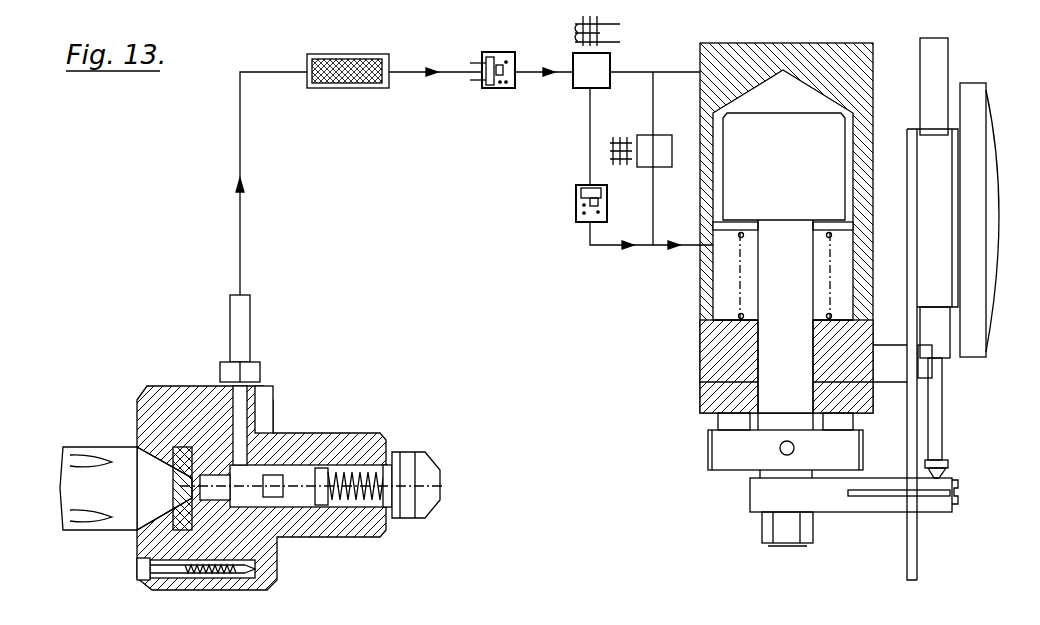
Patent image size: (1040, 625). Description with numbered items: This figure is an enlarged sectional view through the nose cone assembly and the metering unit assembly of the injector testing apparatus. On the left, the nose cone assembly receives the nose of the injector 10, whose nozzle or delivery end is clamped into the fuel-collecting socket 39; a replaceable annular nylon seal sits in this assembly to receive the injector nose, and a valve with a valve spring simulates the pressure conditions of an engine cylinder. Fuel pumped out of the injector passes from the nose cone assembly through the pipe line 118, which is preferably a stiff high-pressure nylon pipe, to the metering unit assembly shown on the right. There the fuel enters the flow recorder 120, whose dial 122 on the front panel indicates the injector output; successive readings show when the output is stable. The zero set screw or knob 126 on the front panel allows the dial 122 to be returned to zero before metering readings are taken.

The injector 10 is at (97, 447).
The fuel-collecting socket 39 is at (175, 487).
The pipe line 118 is at (248, 222).
The flow recorder 120 is at (934, 145).
The dial 122 is at (992, 160).
The zero set screw or knob 126 is at (928, 502).